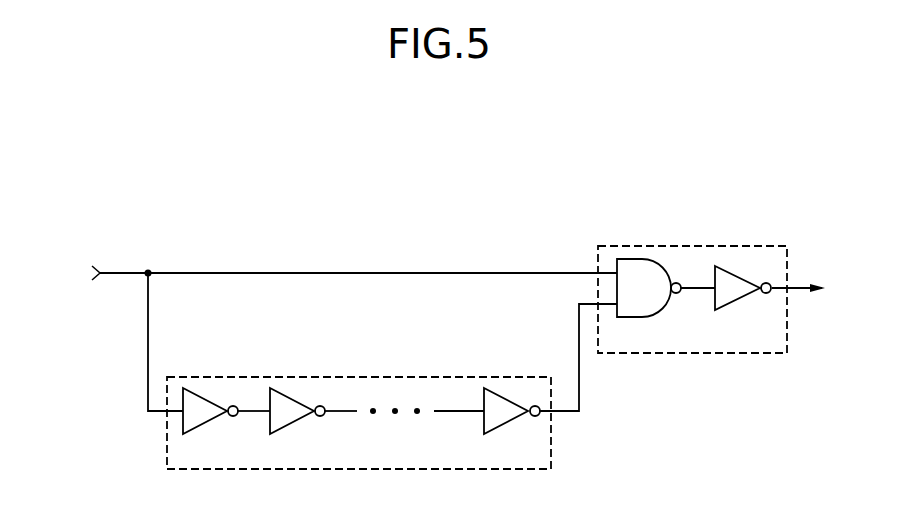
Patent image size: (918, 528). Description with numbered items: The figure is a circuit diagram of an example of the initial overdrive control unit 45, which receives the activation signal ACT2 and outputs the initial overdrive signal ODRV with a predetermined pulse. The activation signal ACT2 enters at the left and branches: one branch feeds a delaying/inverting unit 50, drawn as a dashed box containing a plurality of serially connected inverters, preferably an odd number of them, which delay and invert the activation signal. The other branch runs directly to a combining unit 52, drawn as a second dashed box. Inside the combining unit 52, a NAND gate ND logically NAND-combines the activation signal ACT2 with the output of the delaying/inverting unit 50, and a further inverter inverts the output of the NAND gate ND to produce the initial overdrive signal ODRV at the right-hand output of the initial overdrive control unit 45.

The initial overdrive control unit 45 is at (812, 150).
The delaying/inverting unit 50 is at (360, 377).
The combining unit 52 is at (692, 246).